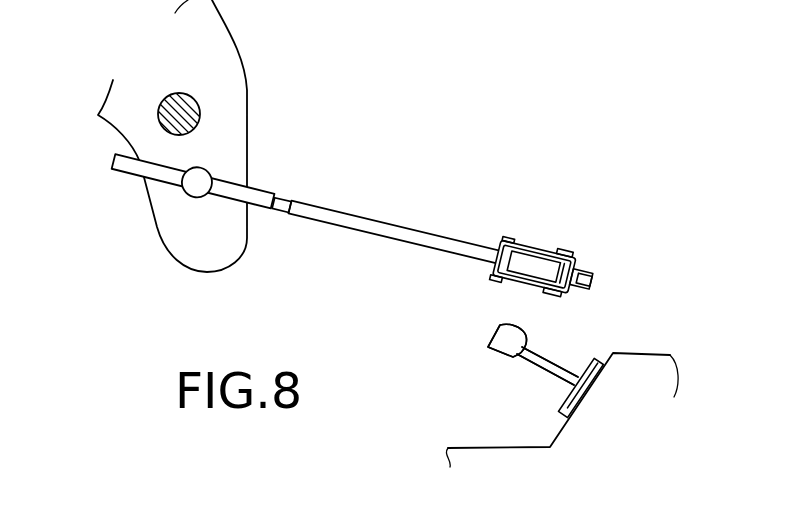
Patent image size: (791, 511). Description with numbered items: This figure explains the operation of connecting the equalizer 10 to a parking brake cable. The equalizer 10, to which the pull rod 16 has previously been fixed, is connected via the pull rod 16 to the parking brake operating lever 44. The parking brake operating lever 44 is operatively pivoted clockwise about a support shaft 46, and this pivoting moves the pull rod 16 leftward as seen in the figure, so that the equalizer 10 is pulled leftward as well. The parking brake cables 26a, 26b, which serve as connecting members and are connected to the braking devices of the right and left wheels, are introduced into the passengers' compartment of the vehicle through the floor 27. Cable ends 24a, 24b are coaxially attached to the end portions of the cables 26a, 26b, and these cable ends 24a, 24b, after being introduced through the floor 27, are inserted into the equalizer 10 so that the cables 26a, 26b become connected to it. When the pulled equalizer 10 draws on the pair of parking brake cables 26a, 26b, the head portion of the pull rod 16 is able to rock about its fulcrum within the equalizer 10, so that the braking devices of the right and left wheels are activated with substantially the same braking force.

The equalizer 10 is at (584, 222).
The pull rod 16 is at (329, 216).
The parking brake operating lever 44 is at (209, 33).
The support shaft 46 is at (196, 103).
The cable end 24a is at (497, 333).
The cable end 24b is at (507, 340).
The parking brake cable 26a is at (548, 369).
The parking brake cable 26b is at (547, 366).
The floor 27 is at (647, 353).